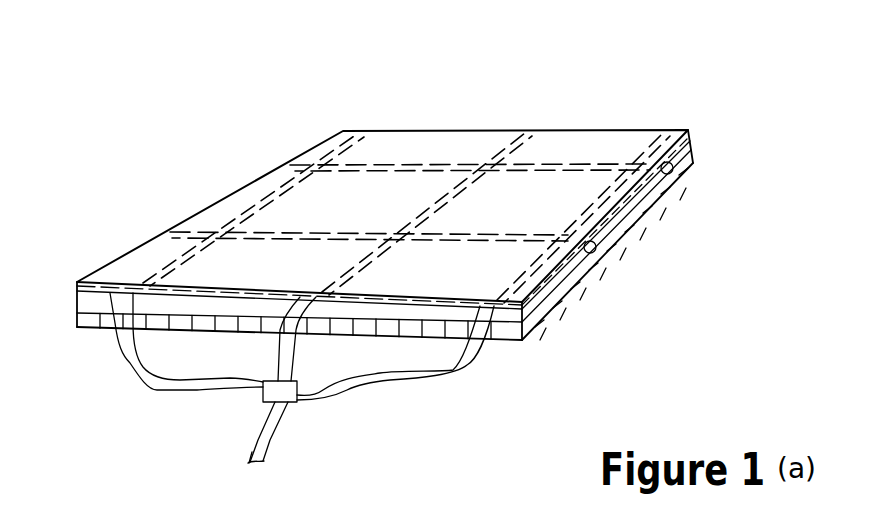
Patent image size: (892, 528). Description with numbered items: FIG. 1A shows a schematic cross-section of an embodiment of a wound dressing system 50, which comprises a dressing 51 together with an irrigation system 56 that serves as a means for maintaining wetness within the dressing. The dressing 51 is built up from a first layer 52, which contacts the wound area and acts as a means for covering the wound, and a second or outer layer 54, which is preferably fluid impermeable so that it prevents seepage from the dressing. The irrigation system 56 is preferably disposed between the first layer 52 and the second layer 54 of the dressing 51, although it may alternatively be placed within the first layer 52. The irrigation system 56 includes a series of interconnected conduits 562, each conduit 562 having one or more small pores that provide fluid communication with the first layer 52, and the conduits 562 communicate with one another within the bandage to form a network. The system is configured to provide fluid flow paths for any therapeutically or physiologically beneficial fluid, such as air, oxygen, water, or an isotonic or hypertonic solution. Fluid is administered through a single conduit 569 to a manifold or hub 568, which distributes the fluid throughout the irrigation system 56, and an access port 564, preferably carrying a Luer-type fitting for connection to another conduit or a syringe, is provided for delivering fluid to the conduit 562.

The wound dressing system 50 is at (204, 182).
The dressing 51 is at (75, 302).
The first layer 52 is at (546, 311).
The second layer 54 is at (606, 219).
The irrigation system 56 is at (558, 165).
The conduit 562 is at (356, 264).
The access port 564 is at (247, 463).
The manifold 568 is at (300, 403).
The single conduit 569 is at (274, 429).